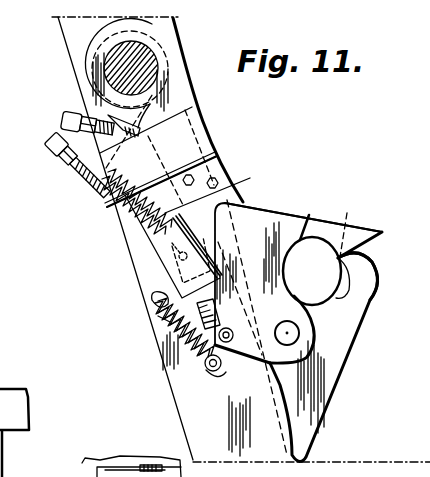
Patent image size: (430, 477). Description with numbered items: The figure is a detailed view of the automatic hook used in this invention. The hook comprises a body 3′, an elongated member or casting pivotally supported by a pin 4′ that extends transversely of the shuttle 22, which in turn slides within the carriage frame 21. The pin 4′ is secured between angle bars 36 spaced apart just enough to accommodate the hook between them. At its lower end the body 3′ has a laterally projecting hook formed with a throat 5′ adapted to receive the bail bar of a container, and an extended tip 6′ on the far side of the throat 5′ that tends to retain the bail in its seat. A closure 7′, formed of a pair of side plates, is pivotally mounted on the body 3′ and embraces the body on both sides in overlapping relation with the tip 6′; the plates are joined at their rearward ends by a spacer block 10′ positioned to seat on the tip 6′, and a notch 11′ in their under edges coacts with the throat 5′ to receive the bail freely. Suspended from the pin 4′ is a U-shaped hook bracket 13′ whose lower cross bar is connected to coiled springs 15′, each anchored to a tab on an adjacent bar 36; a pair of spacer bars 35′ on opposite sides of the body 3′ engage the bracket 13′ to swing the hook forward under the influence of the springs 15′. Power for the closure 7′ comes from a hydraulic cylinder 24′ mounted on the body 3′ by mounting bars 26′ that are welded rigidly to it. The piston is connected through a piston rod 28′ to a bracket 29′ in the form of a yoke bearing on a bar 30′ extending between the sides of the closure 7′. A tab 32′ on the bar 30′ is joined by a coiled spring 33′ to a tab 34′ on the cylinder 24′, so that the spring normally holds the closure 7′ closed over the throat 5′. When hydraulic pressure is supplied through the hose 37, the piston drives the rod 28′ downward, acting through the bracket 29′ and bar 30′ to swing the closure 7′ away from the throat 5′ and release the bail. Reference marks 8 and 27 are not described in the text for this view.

The shuttle frame 22 is at (62, 39).
The hose 37 is at (72, 110).
The pin 4′ is at (141, 65).
The angle bars 36 is at (181, 52).
The body 3′ is at (172, 97).
The spacer bars 35′ is at (190, 127).
The mounting bars 26′ is at (218, 166).
The hook bracket 13′ is at (81, 165).
The coiled springs 15′ is at (117, 219).
The hydraulic cylinder 24′ is at (165, 254).
The tab 34′ is at (163, 294).
The coiled spring 33′ is at (165, 322).
The piston rod 28′ is at (208, 279).
The bar 30′ is at (198, 374).
The bracket 29′ is at (242, 366).
The tab 32′ is at (220, 378).
The closure 7′ is at (270, 204).
The notch 11′ is at (309, 218).
The spacer block 10′ is at (352, 226).
The tip 6′ is at (363, 273).
The throat 5′ is at (340, 294).
The hole 8 is at (287, 333).
The bracket 27 is at (0, 394).
The carriage frame 21 is at (84, 468).